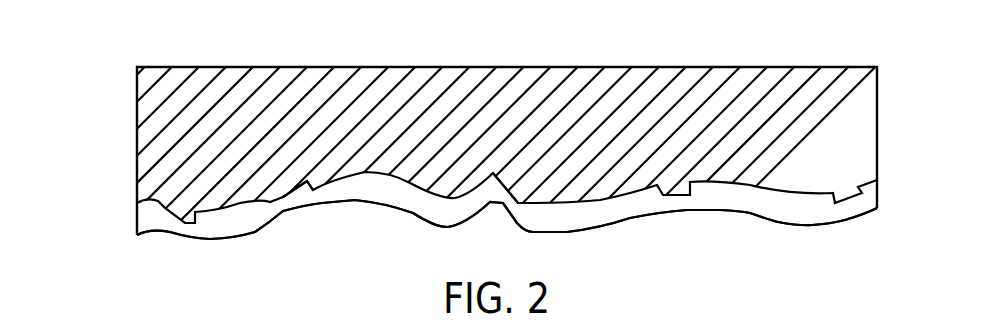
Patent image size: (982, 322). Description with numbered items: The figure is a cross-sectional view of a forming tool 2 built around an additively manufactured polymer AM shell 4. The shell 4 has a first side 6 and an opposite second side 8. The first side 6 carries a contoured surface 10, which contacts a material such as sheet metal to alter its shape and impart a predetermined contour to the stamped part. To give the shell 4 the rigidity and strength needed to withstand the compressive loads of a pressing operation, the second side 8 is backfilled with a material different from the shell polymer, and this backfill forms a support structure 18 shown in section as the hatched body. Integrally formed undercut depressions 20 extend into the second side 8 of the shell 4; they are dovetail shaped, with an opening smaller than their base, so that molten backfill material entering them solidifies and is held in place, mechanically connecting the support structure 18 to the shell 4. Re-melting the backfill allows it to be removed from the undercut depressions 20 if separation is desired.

The forming tool 2 is at (88, 82).
The support structure 18 is at (338, 98).
The AM shell 4 is at (507, 166).
The second side 8 is at (613, 193).
The first side 6 is at (289, 225).
The contoured surface 10 is at (625, 226).
The undercut depressions 20 is at (285, 201).